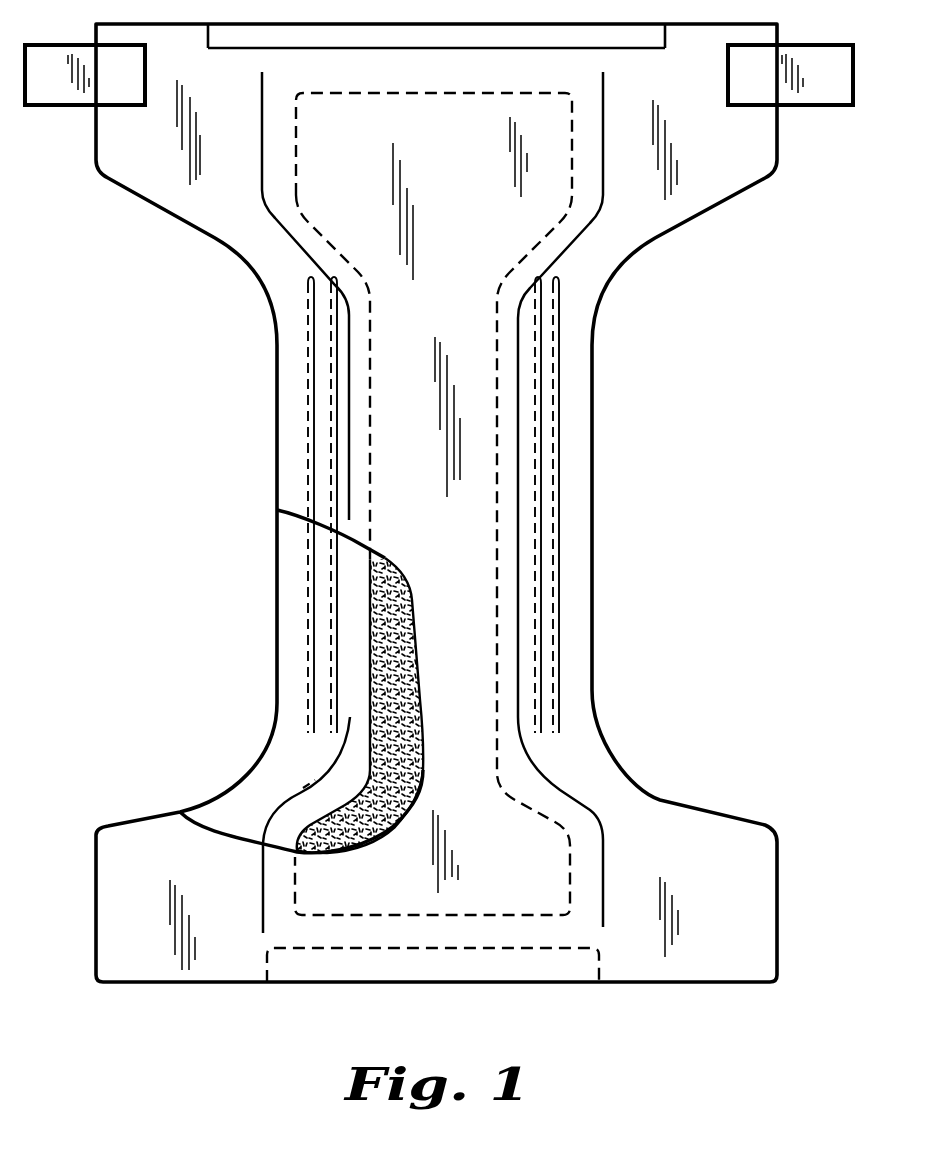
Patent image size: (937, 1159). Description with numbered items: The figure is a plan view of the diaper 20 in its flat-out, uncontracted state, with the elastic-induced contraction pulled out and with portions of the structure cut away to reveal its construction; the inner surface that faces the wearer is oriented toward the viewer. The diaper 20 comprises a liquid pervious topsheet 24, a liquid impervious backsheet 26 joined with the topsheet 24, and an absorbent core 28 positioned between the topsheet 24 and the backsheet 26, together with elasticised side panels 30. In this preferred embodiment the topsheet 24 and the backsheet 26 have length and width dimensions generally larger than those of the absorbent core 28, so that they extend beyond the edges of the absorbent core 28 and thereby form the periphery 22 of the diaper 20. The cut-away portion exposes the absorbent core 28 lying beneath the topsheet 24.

The diaper 20 is at (778, 398).
The periphery 22 is at (277, 705).
The topsheet 24 is at (296, 398).
The backsheet 26 is at (297, 620).
The absorbent core 28 is at (388, 782).
The elasticised side panels 30 is at (292, 564).